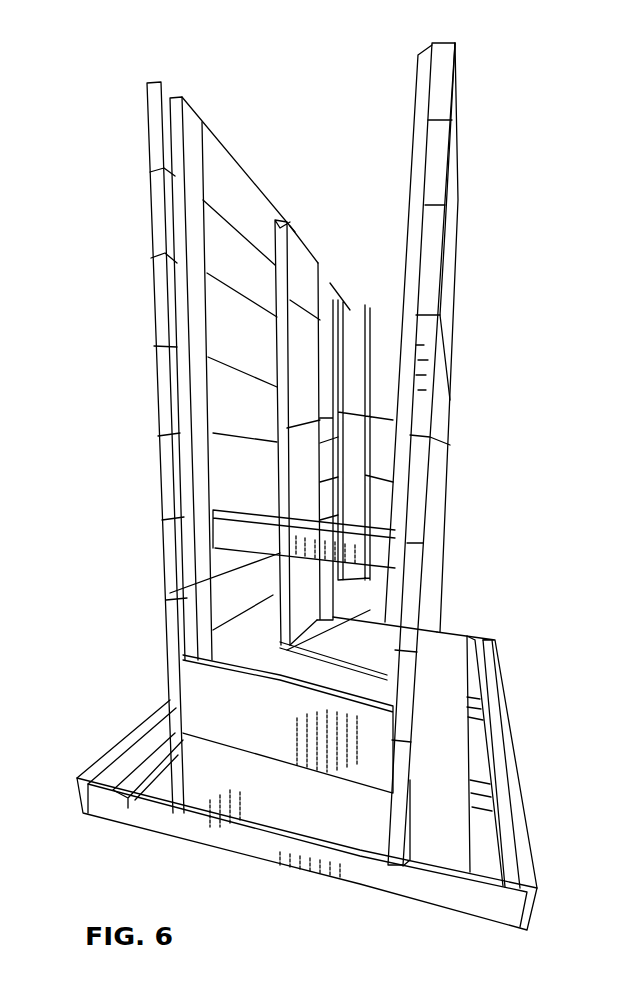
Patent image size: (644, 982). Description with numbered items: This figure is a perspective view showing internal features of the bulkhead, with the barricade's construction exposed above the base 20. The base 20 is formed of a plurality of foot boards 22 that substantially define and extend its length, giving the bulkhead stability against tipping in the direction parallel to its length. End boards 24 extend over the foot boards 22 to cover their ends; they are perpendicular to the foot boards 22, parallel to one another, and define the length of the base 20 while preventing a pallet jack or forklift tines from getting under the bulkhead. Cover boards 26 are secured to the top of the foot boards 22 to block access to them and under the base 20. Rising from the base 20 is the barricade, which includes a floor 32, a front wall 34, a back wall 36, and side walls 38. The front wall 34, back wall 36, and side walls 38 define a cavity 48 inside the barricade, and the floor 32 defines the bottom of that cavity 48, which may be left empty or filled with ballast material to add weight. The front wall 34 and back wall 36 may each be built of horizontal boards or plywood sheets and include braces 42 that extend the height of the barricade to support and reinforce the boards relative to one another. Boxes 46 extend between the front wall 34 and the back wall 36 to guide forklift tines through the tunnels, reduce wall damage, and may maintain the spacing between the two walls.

The base 20 is at (506, 690).
The foot boards 22 is at (397, 885).
The end boards 24 is at (78, 797).
The cover boards 26 is at (137, 752).
The floor 32 is at (283, 653).
The front wall 34 is at (432, 480).
The back wall 36 is at (160, 412).
The side walls 38 is at (215, 697).
The braces 42 is at (345, 300).
The boxes 46 is at (255, 540).
The cavity 48 is at (400, 372).